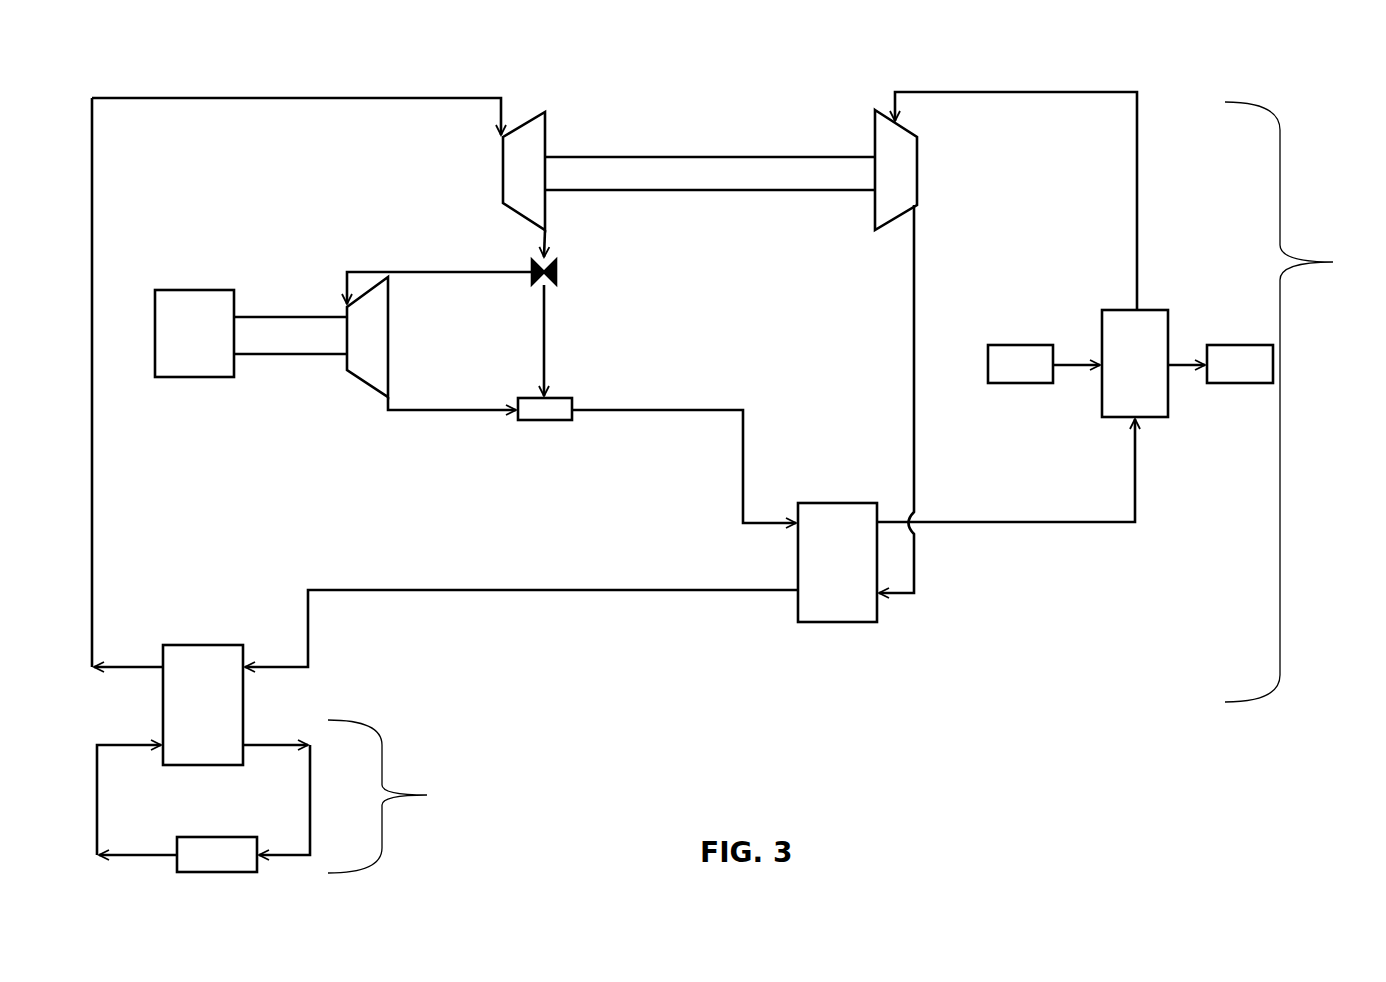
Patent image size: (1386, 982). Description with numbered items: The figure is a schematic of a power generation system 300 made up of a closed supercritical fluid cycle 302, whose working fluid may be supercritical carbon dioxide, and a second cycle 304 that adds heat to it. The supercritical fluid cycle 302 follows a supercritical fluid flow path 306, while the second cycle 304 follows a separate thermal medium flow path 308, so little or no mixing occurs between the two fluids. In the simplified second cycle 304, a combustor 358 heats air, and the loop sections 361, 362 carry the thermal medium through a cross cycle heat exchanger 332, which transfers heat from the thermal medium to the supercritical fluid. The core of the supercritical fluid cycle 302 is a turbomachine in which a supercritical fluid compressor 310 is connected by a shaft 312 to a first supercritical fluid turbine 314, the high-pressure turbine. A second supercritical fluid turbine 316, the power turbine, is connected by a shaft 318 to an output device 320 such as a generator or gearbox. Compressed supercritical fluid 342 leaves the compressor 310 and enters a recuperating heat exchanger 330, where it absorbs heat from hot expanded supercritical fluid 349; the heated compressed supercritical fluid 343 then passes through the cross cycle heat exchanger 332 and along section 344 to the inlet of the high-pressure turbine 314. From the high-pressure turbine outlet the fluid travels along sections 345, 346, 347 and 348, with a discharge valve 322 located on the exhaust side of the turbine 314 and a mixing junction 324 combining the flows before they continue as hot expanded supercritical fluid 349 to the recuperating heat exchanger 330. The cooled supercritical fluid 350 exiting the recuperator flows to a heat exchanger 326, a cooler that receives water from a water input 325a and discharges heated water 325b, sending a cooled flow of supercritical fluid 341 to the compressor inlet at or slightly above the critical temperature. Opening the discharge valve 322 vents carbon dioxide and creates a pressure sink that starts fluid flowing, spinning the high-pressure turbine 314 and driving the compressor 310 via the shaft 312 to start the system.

The power generation system 300 is at (195, 30).
The supercritical fluid cycle 302 is at (1302, 402).
The second cycle 304 is at (404, 796).
The supercritical fluid flow path 306 is at (300, 84).
The thermal medium flow path 308 is at (279, 736).
The supercritical fluid compressor 310 is at (890, 172).
The shaft 312 is at (722, 155).
The first supercritical fluid turbine 314 is at (542, 140).
The second supercritical fluid turbine 316 is at (367, 348).
The shaft 318 is at (318, 327).
The output device 320 is at (194, 333).
The discharge valve 322 is at (550, 265).
The mixing junction 324 is at (555, 407).
The water input 325a is at (1025, 370).
The heated water 325b is at (1243, 357).
The heat exchanger 326 is at (1152, 348).
The recuperating heat exchanger 330 is at (837, 562).
The cross cycle heat exchanger 332 is at (203, 705).
The cooled flow of supercritical fluid 341 is at (1137, 245).
The compressed supercritical fluid 342 is at (910, 318).
The heated compressed supercritical fluid 343 is at (590, 590).
The section 344 is at (97, 513).
The section 345 is at (542, 235).
The section 346 is at (415, 270).
The section 347 is at (448, 413).
The section 348 is at (543, 328).
The hot expanded supercritical fluid 349 is at (678, 408).
The cooled supercritical fluid 350 is at (1048, 522).
The combustor 358 is at (220, 860).
The coolant return line 361 is at (137, 853).
The coolant supply line 362 is at (308, 837).